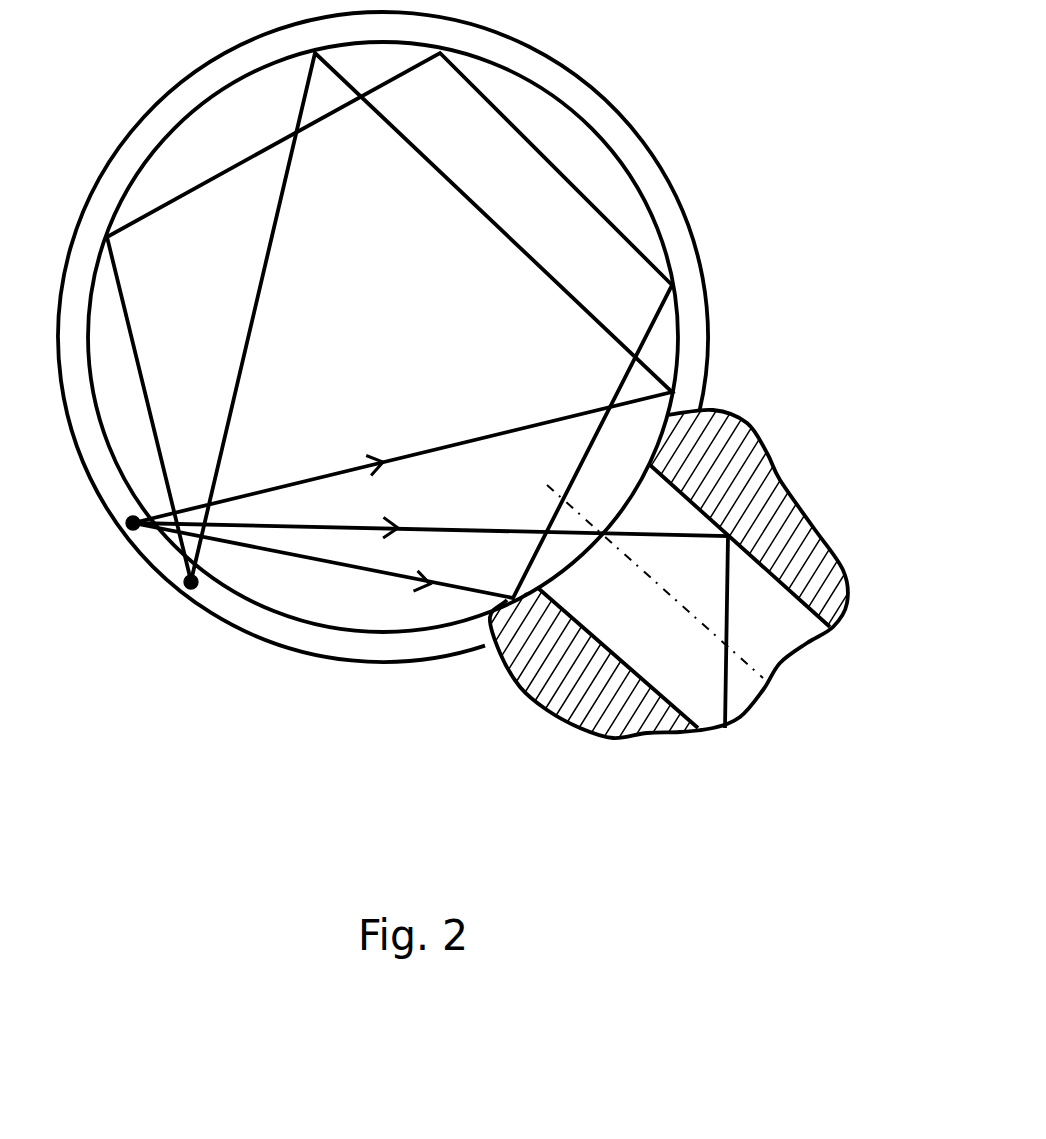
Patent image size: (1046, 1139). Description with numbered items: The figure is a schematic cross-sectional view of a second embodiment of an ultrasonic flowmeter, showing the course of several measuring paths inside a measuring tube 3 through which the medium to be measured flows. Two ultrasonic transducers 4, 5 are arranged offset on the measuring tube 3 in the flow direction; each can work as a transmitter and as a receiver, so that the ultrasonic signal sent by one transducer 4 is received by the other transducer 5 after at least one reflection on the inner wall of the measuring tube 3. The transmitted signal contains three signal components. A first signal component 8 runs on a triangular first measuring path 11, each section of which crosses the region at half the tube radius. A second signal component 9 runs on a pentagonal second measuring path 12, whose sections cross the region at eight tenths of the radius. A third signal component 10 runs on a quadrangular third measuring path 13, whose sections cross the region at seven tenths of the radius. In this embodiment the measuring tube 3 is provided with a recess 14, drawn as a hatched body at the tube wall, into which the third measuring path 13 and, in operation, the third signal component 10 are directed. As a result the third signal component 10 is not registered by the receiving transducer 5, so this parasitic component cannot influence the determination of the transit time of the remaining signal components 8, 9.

The measuring tube 3 is at (657, 190).
The ultrasonic transducer 4 is at (127, 535).
The ultrasonic transducer 5 is at (183, 593).
The first signal component 8 is at (505, 317).
The second signal component 9 is at (389, 425).
The third signal component 10 is at (430, 679).
The first measuring path 11 is at (513, 431).
The second measuring path 12 is at (307, 560).
The third measuring path 13 is at (424, 535).
The recess 14 is at (710, 680).